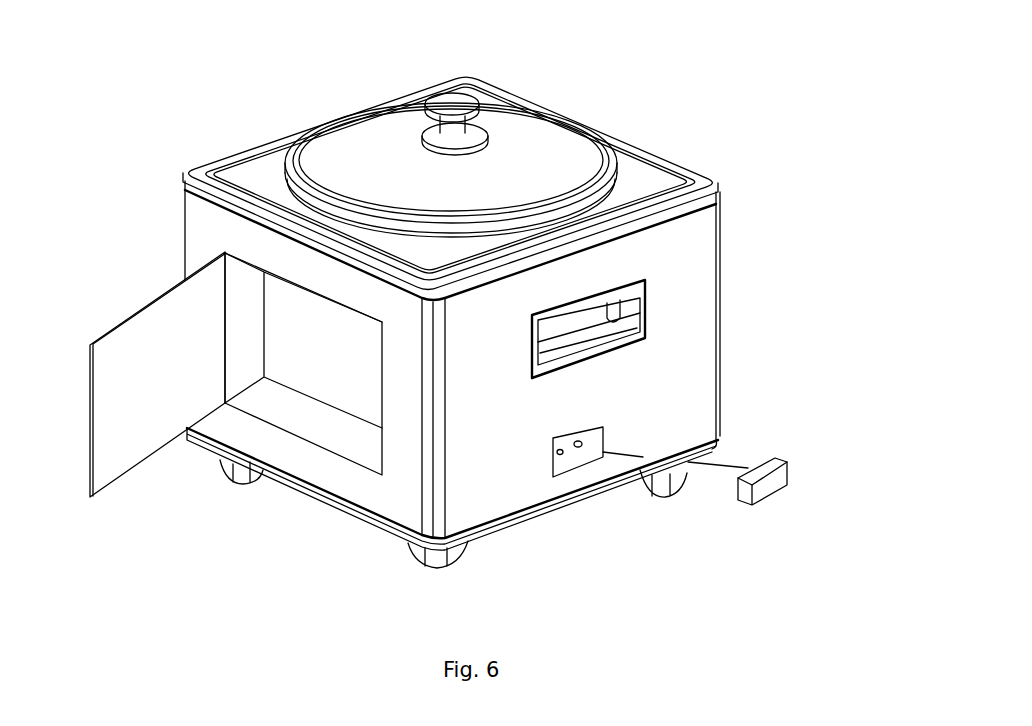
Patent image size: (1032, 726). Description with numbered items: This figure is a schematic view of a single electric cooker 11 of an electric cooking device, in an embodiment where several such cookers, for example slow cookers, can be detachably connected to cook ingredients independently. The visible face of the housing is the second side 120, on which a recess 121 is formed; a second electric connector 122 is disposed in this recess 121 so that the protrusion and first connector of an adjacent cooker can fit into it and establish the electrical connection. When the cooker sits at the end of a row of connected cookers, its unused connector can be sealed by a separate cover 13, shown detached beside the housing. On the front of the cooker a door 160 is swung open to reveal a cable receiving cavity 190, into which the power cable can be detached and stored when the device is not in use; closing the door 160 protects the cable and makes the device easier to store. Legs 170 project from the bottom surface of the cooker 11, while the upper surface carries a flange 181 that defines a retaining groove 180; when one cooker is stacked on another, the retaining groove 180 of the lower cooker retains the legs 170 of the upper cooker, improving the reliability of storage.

The electric cooker 11 is at (597, 88).
The retaining groove 180 is at (262, 172).
The flange 181 is at (700, 180).
The second side 120 is at (685, 287).
The door 160 is at (145, 332).
The cable receiving cavity 190 is at (327, 365).
The leg 170 is at (230, 475).
The recess 121 is at (567, 458).
The second electric connector 122 is at (582, 447).
The cover 13 is at (778, 460).